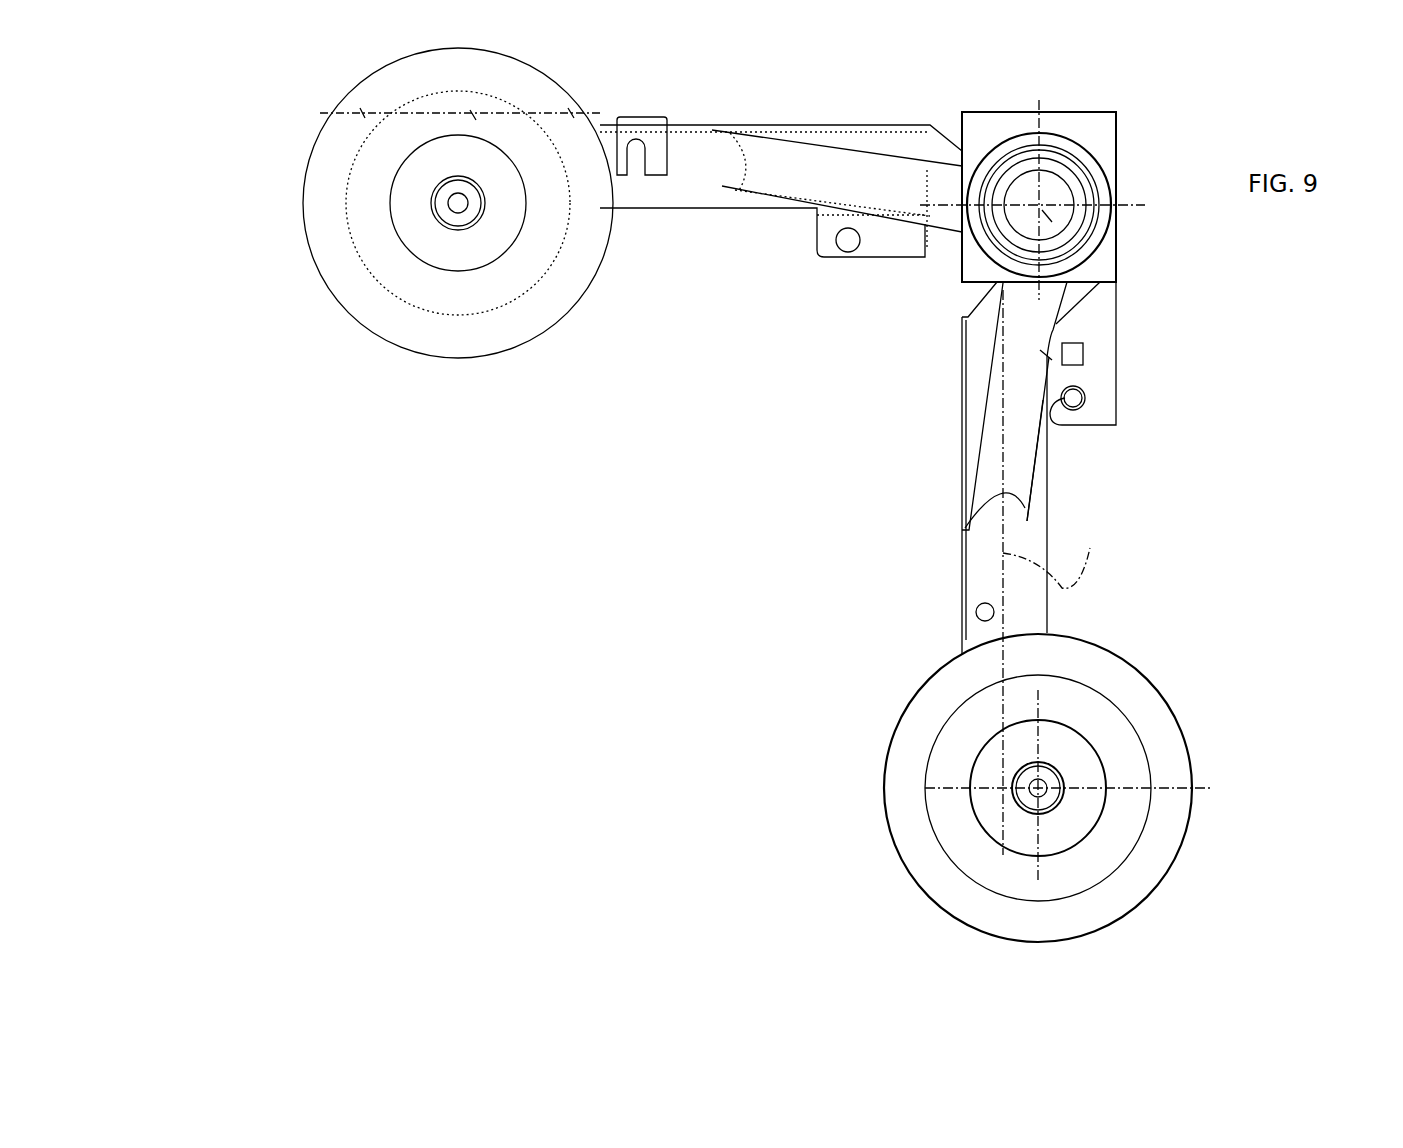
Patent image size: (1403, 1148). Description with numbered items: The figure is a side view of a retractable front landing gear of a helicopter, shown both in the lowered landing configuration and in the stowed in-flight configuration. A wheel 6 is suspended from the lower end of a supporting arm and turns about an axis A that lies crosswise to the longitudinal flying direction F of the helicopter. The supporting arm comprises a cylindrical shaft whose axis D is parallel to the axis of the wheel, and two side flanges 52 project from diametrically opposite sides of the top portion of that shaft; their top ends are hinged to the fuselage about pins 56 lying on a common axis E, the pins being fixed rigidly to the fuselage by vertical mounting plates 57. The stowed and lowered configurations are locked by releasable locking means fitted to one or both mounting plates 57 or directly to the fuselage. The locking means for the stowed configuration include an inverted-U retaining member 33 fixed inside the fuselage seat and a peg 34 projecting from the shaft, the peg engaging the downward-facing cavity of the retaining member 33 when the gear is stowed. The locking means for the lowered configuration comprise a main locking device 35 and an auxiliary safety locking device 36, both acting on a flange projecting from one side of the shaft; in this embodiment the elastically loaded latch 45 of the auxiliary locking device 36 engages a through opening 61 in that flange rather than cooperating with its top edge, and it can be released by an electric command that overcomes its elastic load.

The wheel 6 is at (905, 795).
The retaining member 33 is at (660, 147).
The peg 34 is at (975, 612).
The main locking device 35 is at (1088, 426).
The auxiliary safety locking device 36 is at (1088, 341).
The latch 45 is at (1074, 362).
The side flange 52 is at (1033, 510).
The pin 56 is at (1053, 196).
The vertical mounting plate 57 is at (1103, 128).
The through opening 61 is at (1052, 358).
The wheel axis A is at (1226, 799).
The shaft axis D is at (1052, 566).
The hinge axis E is at (1122, 214).
The longitudinal flying direction F is at (208, 168).